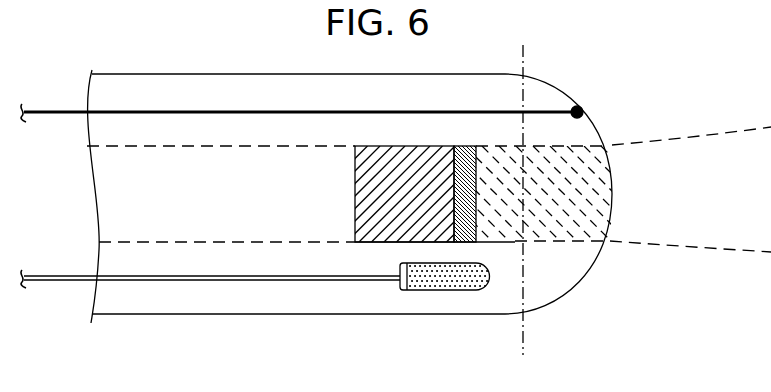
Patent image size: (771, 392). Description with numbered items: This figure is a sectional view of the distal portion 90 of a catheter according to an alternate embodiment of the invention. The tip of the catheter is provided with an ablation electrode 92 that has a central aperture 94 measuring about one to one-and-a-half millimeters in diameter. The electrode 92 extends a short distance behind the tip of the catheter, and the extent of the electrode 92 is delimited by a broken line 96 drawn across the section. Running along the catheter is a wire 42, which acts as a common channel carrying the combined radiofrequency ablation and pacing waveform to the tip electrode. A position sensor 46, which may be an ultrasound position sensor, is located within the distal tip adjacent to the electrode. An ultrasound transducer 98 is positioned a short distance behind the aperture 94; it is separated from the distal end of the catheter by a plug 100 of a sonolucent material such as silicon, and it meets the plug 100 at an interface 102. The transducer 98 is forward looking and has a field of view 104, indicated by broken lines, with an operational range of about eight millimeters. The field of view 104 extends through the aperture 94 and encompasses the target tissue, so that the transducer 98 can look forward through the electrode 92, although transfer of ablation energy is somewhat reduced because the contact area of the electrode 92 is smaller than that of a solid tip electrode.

The distal portion 90 is at (627, 47).
The wire 42 is at (178, 110).
The position sensor 46 is at (441, 284).
The ablation electrode 92 is at (560, 78).
The central aperture 94 is at (612, 183).
The broken line 96 is at (525, 333).
The ultrasound transducer 98 is at (355, 192).
The plug 100 is at (565, 145).
The interface 102 is at (466, 146).
The field of view 104 is at (682, 137).